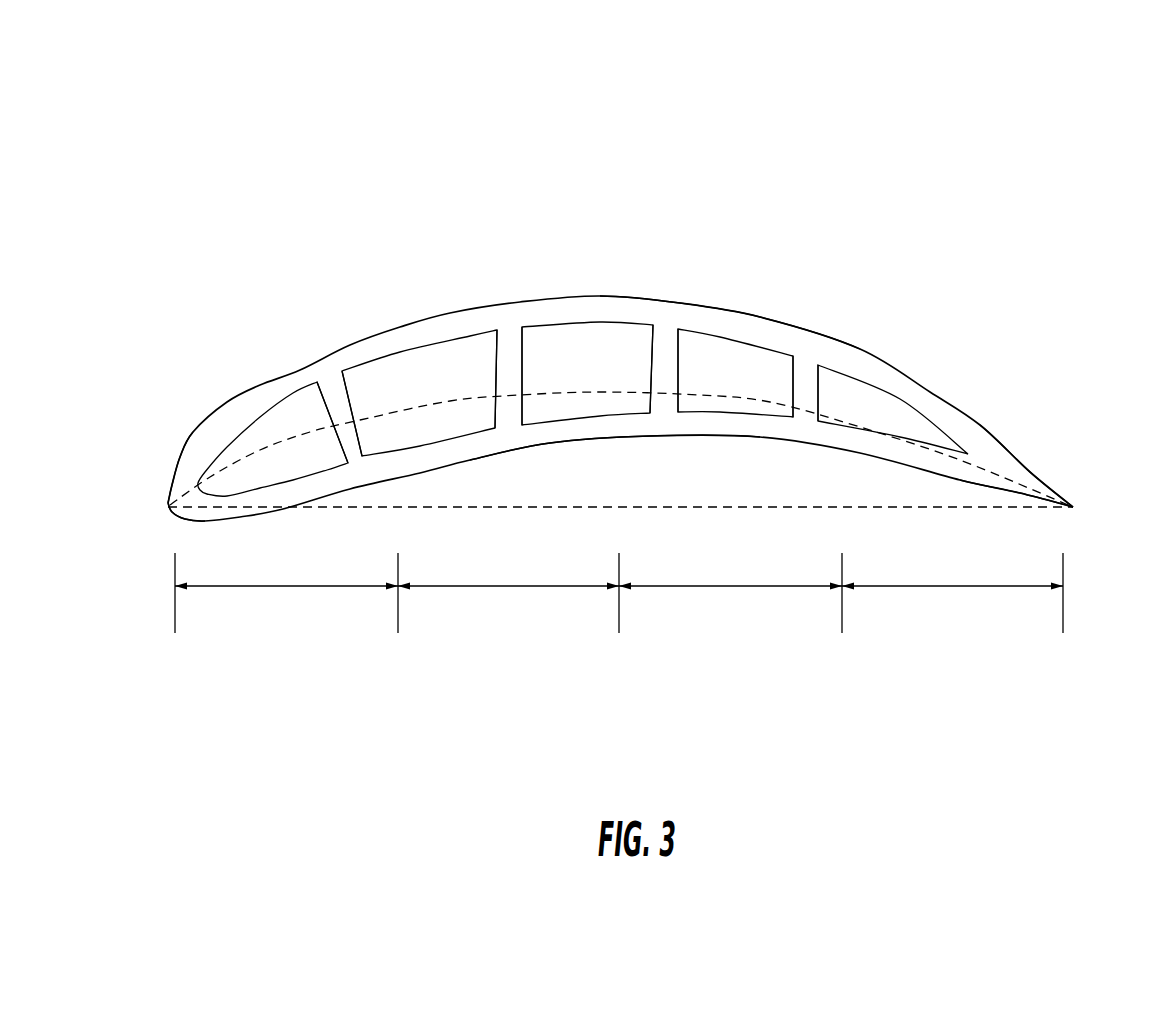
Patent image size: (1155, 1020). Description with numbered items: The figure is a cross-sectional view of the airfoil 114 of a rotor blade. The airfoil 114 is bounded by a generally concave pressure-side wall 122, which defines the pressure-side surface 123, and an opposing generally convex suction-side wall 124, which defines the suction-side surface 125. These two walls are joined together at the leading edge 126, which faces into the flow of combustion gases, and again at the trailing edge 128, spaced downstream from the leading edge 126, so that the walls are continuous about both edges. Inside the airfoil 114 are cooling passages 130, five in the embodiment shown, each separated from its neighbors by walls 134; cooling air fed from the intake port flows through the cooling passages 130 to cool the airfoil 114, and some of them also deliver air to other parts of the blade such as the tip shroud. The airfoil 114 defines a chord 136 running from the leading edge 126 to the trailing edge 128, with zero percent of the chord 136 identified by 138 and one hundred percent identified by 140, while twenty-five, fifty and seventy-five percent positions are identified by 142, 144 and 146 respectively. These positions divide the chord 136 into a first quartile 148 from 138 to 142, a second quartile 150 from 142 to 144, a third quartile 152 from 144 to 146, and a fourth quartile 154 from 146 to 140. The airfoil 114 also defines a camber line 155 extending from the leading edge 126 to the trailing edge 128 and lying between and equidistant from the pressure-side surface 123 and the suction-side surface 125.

The airfoil 114 is at (226, 160).
The pressure-side wall 122 is at (474, 452).
The pressure-side surface 123 is at (590, 445).
The suction-side wall 124 is at (588, 312).
The suction-side surface 125 is at (733, 313).
The leading edge 126 is at (168, 504).
The trailing edge 128 is at (1076, 507).
The cooling passages 130 is at (289, 424).
The walls 134 is at (338, 393).
The chord 136 is at (748, 510).
The zero percent of the chord 138 is at (176, 622).
The one hundred percent of the chord 140 is at (1064, 622).
The twenty-five percent of the chord 142 is at (399, 622).
The fifty percent of the chord 144 is at (620, 622).
The seventy-five percent of the chord 146 is at (843, 622).
The first quartile 148 is at (275, 586).
The second quartile 150 is at (492, 586).
The third quartile 152 is at (725, 586).
The fourth quartile 154 is at (928, 586).
The camber line 155 is at (244, 452).